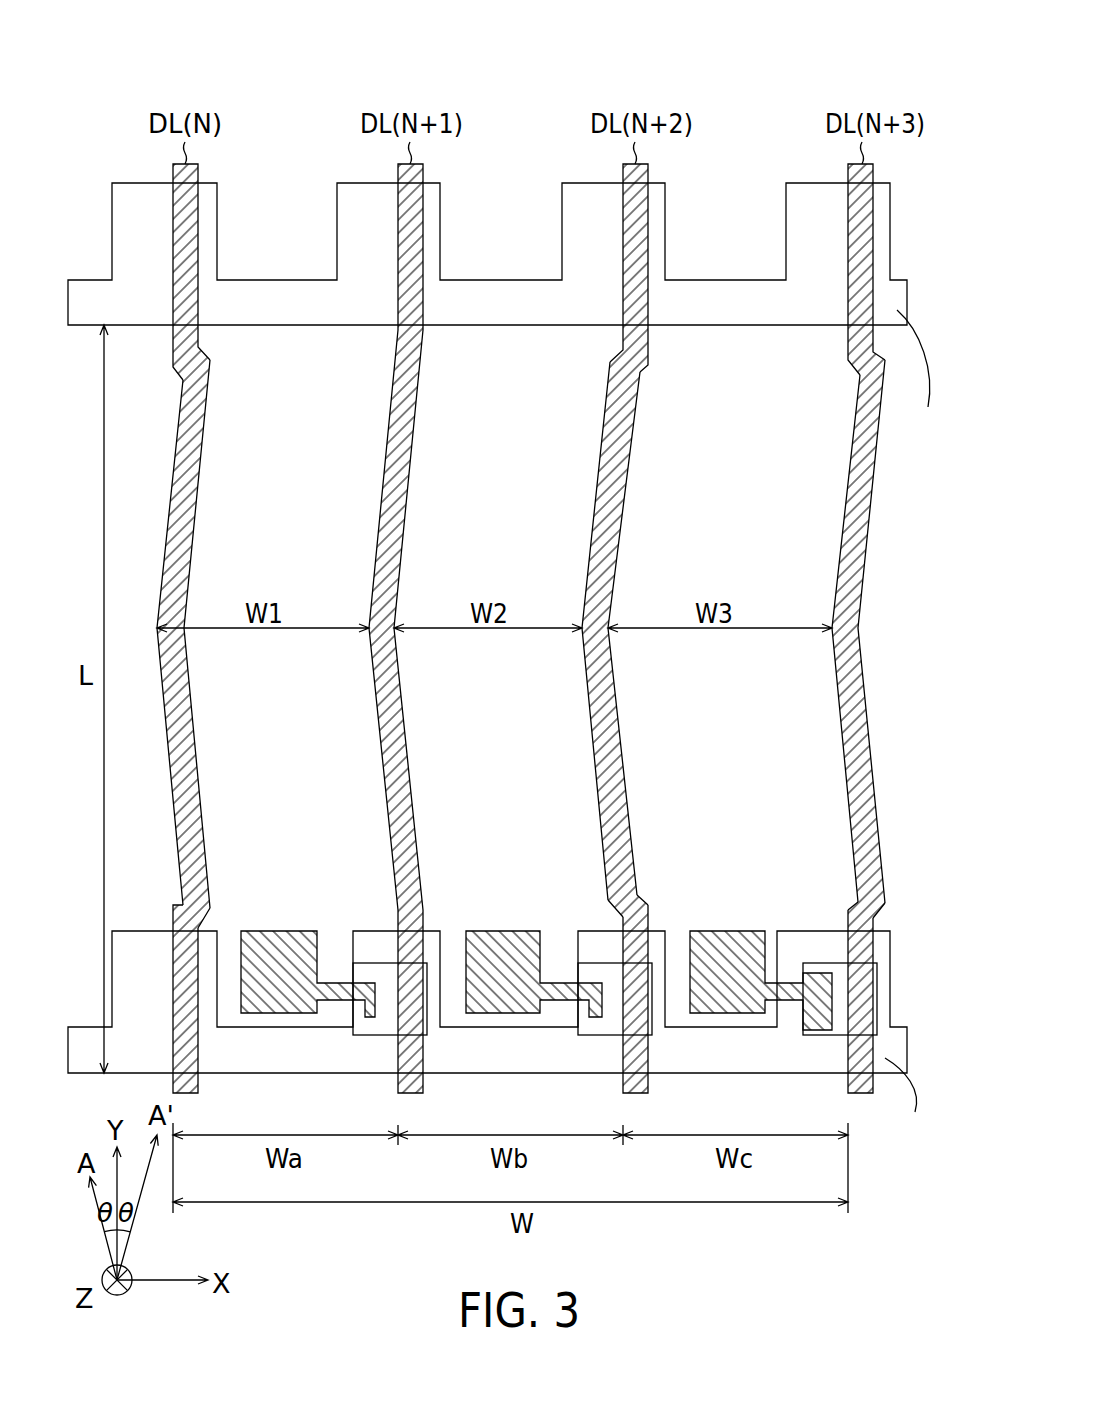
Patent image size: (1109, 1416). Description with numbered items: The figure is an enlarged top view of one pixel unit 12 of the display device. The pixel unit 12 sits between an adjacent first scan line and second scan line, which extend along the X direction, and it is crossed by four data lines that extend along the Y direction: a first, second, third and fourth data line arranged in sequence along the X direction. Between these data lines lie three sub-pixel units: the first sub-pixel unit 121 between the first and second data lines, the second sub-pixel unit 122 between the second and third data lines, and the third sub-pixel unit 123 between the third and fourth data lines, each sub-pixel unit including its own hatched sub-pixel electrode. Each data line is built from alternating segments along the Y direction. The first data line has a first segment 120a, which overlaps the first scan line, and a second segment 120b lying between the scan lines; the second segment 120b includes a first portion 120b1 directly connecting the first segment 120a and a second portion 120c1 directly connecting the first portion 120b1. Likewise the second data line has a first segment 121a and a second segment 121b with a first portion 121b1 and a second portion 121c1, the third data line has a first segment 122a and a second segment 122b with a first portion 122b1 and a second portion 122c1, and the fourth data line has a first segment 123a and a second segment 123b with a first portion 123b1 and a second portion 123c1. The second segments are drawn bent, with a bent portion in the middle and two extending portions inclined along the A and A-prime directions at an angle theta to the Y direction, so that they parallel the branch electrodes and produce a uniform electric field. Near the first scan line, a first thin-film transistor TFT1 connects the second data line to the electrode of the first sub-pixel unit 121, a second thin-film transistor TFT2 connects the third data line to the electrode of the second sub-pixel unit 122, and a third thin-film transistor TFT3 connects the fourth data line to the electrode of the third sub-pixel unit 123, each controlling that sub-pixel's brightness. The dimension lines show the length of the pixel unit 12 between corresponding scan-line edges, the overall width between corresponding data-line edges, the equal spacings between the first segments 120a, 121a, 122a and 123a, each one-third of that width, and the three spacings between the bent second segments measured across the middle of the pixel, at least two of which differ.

The pixel unit 12 is at (845, 70).
The first segment of first data line 120a is at (183, 987).
The second segment of first data line 120b is at (182, 717).
The first portion of second segment of first data line 120b1 is at (183, 921).
The second portion of second segment of first data line 120c1 is at (185, 902).
The first sub-pixel unit 121 is at (277, 212).
The first segment of second data line 121a is at (408, 957).
The second segment of second data line 121b is at (397, 738).
The first portion of second segment of second data line 121b1 is at (408, 927).
The second portion of second segment of second data line 121c1 is at (408, 908).
The second sub-pixel unit 122 is at (502, 212).
The first segment of third data line 122a is at (633, 957).
The second segment of third data line 122b is at (594, 738).
The first portion of second segment of third data line 122b1 is at (632, 927).
The second portion of second segment of third data line 122c1 is at (627, 907).
The third sub-pixel unit 123 is at (728, 212).
The first segment of fourth data line 123a is at (858, 957).
The second segment of fourth data line 123b is at (844, 738).
The first portion of second segment of fourth data line 123b1 is at (858, 920).
The second portion of second segment of fourth data line 123c1 is at (863, 902).
The first thin-film transistor TFT1 is at (392, 1007).
The second thin-film transistor TFT2 is at (619, 1007).
The third thin-film transistor TFT3 is at (844, 1007).